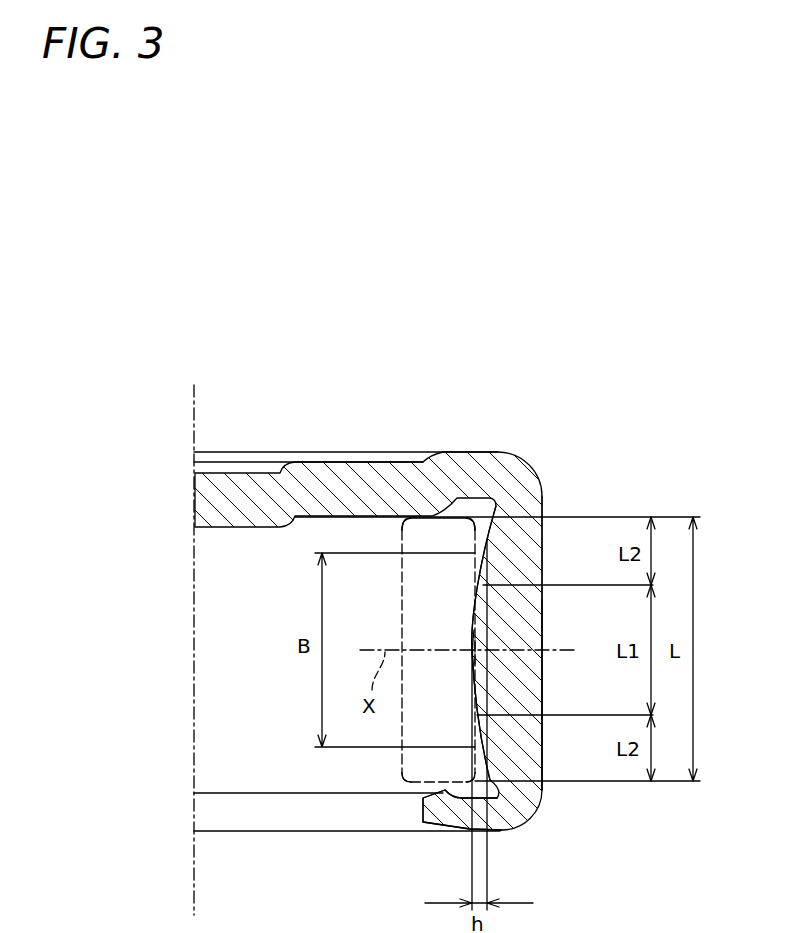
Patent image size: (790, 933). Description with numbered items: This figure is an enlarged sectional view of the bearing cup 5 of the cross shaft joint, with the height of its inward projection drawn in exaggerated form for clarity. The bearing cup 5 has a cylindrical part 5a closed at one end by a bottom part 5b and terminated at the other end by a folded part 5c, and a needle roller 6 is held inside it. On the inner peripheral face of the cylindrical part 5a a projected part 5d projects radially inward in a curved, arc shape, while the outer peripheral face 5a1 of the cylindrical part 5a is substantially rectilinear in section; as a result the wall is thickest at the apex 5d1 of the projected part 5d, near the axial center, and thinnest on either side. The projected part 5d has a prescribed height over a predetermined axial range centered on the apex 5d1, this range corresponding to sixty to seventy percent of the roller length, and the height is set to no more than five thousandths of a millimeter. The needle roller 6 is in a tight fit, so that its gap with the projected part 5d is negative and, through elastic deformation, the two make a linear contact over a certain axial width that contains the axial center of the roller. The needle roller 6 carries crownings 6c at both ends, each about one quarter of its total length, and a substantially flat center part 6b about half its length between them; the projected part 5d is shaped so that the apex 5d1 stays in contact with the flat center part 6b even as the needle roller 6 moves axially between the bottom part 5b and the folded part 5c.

The bearing cup 5 is at (541, 444).
The cylindrical part 5a is at (530, 610).
The outer peripheral face 5a1 is at (543, 700).
The bottom part 5b is at (272, 488).
The folded part 5c is at (437, 832).
The projected part 5d is at (472, 634).
The apex 5d1 is at (472, 655).
The needle roller 6 is at (392, 535).
The center part 6b is at (483, 675).
The crownings 6c is at (506, 537).